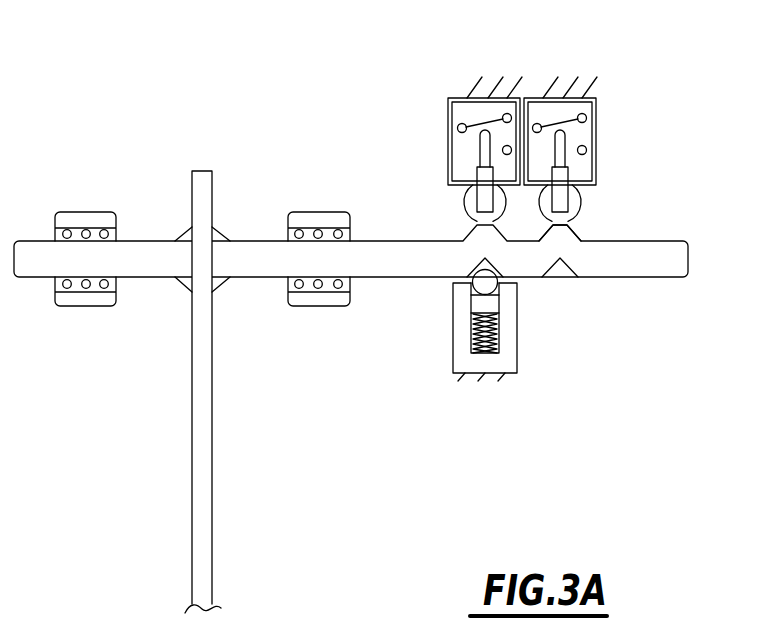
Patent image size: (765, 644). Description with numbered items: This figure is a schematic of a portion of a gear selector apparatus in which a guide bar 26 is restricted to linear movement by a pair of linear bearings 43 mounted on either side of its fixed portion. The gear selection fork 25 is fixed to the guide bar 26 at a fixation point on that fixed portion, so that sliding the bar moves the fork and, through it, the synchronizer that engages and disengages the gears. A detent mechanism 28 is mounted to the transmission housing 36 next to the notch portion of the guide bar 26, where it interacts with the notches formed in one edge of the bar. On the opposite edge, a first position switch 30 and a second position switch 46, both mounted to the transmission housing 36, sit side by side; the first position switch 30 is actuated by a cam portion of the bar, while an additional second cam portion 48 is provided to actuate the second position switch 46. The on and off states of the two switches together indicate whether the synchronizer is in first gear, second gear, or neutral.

The gear selection fork 25 is at (212, 457).
The guide bar 26 is at (677, 257).
The detent mechanism 28 is at (522, 357).
The first position switch 30 is at (448, 147).
The transmission housing 36 is at (493, 84).
The linear bearings 43 is at (85, 306).
The second position switch 46 is at (597, 145).
The second cam portion 48 is at (573, 231).